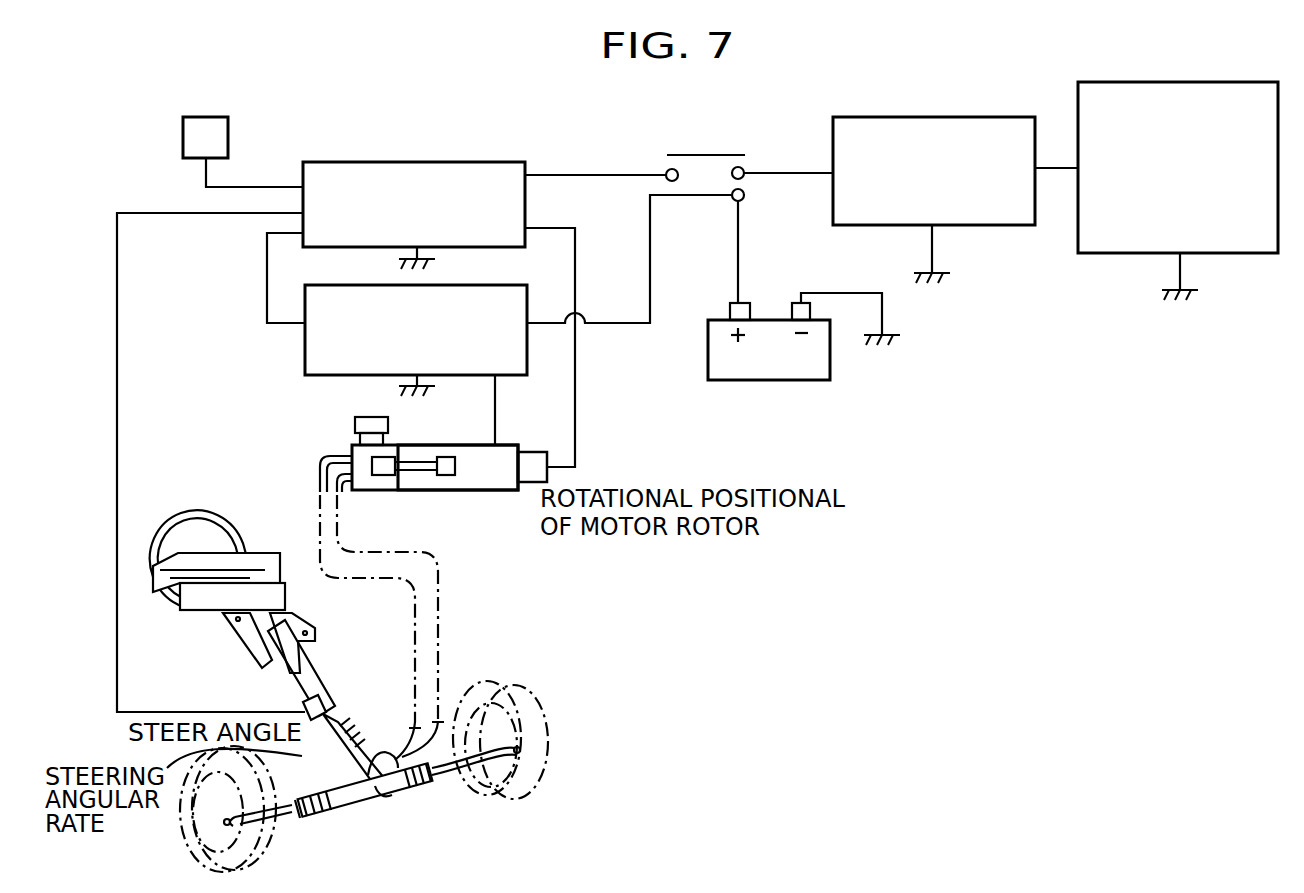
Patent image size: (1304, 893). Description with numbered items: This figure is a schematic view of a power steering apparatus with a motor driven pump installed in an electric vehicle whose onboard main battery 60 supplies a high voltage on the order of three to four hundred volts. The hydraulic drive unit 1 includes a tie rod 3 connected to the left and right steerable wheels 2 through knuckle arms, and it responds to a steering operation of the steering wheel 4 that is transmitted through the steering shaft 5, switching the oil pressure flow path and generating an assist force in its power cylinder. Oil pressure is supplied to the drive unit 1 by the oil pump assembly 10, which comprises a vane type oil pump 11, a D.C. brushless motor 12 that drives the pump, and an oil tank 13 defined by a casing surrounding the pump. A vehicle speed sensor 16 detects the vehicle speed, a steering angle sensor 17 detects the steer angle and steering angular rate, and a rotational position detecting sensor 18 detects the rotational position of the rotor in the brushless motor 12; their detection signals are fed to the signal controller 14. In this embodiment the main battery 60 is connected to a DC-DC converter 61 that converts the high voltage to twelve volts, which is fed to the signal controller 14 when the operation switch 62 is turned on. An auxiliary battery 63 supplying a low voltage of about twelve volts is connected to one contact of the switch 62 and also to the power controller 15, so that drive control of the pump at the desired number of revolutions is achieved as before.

The drive unit 1 is at (375, 815).
The steerable wheels 2 is at (258, 848).
The tie rod 3 is at (285, 812).
The steering wheel 4 is at (222, 520).
The steering shaft 5 is at (342, 716).
The oil pump assembly 10 is at (439, 520).
The oil pump 11 is at (388, 493).
The D.C. brushless motor 12 is at (478, 482).
The oil tank 13 is at (443, 518).
The signal controller 14 is at (478, 162).
The power controller 15 is at (517, 285).
The vehicle speed sensor 16 is at (226, 116).
The steering angle sensor 17 is at (305, 706).
The rotational position detecting sensor 18 is at (533, 465).
The main battery 60 is at (1158, 82).
The DC-DC converter 61 is at (968, 117).
The operation switch 62 is at (722, 148).
The auxiliary battery 63 is at (795, 380).